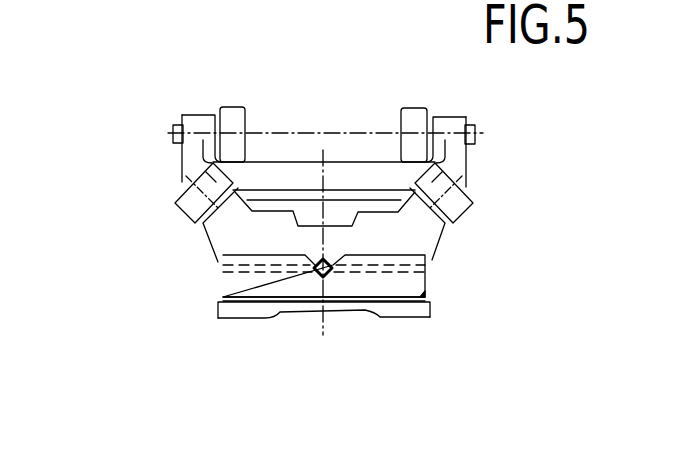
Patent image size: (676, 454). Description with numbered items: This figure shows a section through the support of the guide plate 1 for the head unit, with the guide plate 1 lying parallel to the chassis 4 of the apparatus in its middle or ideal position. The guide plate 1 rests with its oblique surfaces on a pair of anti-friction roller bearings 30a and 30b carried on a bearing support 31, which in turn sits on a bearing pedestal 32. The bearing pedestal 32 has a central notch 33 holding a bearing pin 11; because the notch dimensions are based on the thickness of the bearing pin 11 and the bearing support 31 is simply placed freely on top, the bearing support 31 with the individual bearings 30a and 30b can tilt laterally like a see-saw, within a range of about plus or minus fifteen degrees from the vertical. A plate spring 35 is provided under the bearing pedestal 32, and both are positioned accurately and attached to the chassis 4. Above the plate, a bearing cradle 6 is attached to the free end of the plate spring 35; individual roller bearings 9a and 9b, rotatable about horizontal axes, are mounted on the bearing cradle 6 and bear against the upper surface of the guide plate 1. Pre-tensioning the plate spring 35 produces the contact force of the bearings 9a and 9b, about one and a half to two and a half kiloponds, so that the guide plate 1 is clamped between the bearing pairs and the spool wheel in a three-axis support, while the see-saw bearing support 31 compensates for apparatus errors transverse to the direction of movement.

The guide plate 1 is at (278, 160).
The chassis 4 is at (430, 312).
The bearing cradle 6 is at (463, 160).
The roller bearing 9a is at (226, 106).
The roller bearing 9b is at (410, 113).
The bearing pin 11 is at (320, 272).
The roller bearing 30a is at (186, 208).
The roller bearing 30b is at (455, 208).
The bearing support 31 is at (222, 243).
The bearing pedestal 32 is at (238, 282).
The central notch 33 is at (325, 262).
The plate spring 35 is at (425, 296).